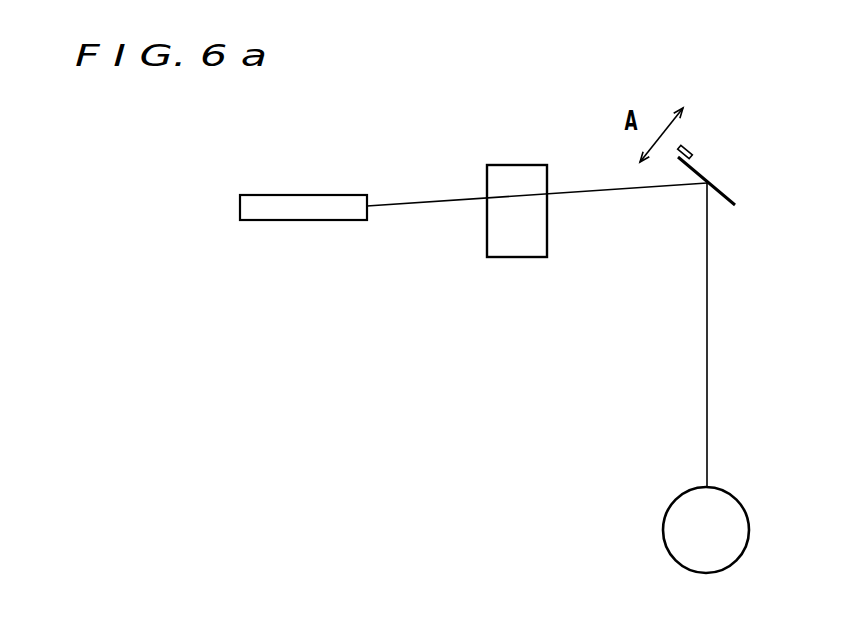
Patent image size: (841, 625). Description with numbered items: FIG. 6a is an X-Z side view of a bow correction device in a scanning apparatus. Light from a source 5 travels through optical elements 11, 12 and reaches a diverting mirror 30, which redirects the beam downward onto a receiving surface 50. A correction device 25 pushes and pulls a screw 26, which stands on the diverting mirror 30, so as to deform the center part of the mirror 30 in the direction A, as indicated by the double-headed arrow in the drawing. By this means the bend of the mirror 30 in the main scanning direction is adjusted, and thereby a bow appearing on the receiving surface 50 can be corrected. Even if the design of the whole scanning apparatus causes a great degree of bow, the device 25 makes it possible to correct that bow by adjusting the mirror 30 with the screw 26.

The laser light source 5 is at (335, 194).
The beam expander / optical unit 11 is at (508, 168).
The beam expander / optical unit 12 is at (508, 165).
The correction device 25 is at (730, 132).
The screw 26 is at (690, 147).
The diverting mirror 30 is at (725, 195).
The receiving surface 50 is at (732, 492).